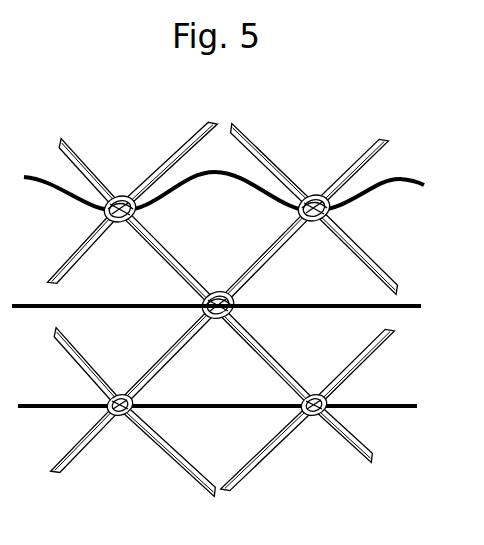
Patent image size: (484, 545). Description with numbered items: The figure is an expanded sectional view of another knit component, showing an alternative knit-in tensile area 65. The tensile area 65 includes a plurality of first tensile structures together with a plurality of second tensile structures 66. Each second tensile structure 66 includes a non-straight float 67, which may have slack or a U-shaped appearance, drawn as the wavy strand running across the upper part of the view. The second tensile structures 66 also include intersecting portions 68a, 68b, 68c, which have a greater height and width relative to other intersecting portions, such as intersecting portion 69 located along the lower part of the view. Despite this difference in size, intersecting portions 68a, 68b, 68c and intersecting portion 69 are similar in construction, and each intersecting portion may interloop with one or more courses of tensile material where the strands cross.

The knit-in tensile area 65 is at (338, 137).
The second tensile structure 66 is at (163, 163).
The float 67 is at (213, 176).
The intersecting portion 68a is at (322, 228).
The intersecting portion 68b is at (222, 325).
The intersecting portion 68c is at (128, 227).
The intersecting portion 69 is at (329, 402).